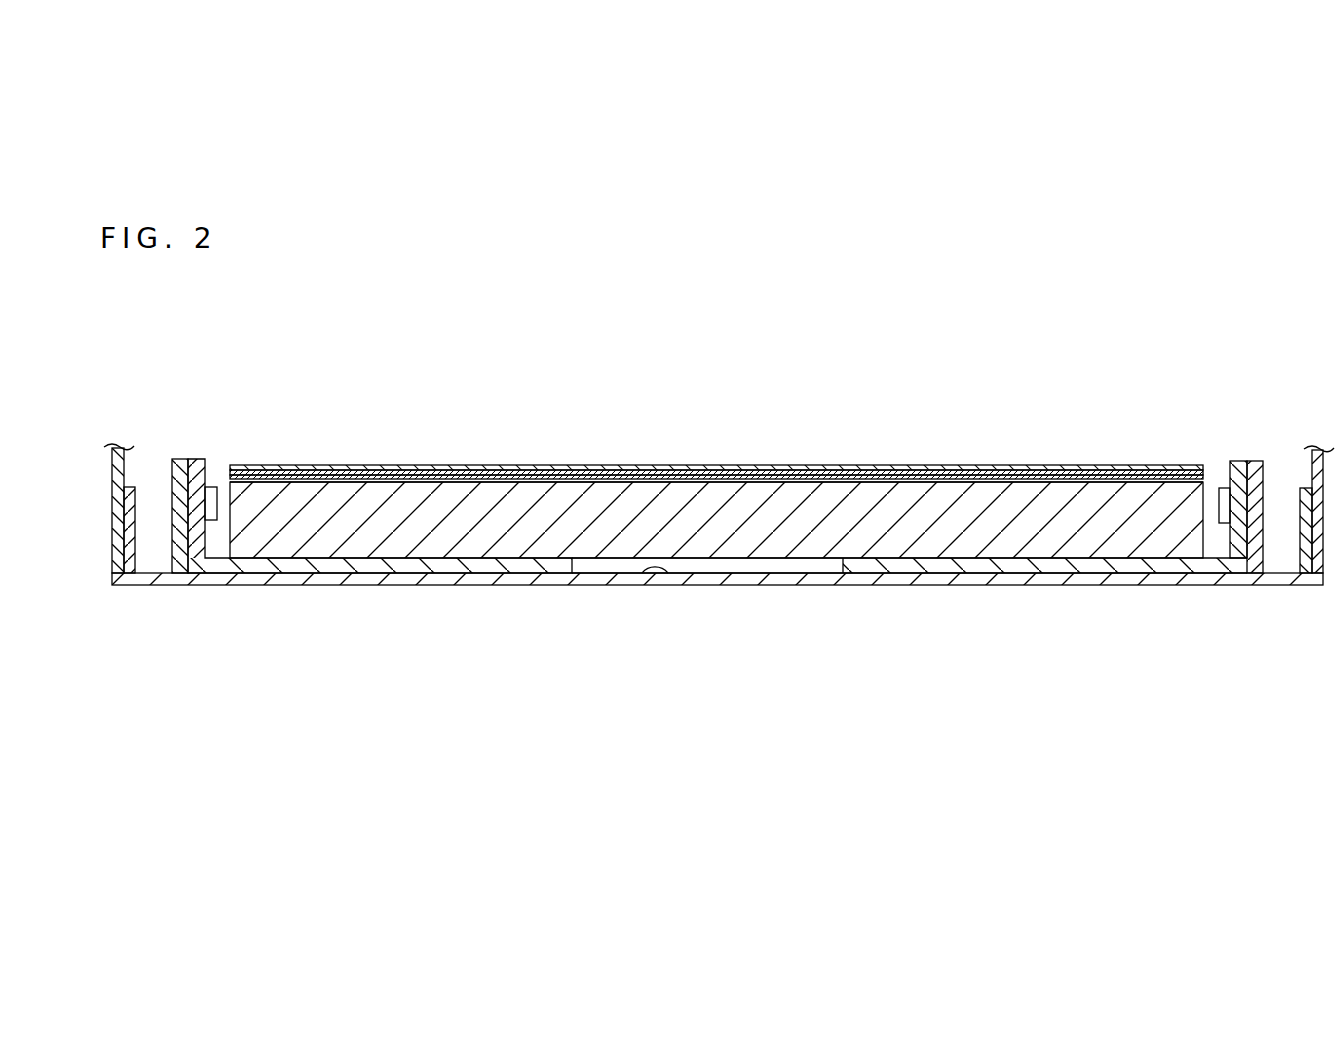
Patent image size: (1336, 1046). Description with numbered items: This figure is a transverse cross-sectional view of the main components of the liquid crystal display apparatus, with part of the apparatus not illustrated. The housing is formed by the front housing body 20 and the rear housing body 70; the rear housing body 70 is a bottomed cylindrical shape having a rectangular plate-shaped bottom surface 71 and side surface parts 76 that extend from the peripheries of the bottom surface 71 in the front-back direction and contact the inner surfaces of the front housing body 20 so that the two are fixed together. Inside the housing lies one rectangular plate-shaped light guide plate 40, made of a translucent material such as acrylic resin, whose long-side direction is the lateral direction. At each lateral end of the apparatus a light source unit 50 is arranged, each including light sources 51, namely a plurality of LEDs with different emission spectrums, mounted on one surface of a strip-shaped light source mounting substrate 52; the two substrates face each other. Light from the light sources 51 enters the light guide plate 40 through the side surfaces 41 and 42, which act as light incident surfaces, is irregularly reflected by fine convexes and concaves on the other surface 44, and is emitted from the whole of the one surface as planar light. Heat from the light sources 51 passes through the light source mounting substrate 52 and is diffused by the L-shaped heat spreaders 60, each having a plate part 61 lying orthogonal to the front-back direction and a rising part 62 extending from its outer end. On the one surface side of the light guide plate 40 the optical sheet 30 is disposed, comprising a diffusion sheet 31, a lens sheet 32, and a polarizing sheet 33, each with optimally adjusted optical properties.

The front housing body 20 is at (720, 521).
The optical sheet 30 is at (716, 409).
The diffusion sheet 31 is at (758, 396).
The lens sheet 32 is at (850, 474).
The polarizing sheet 33 is at (798, 466).
The light guide plate 40 is at (462, 525).
The side surface 41 is at (220, 530).
The side surface 42 is at (1205, 492).
The other surface 44 is at (738, 560).
The light source unit 50 is at (1222, 570).
The light source 51 is at (1225, 523).
The light source mounting substrate 52 is at (1240, 548).
The heat spreader 60 is at (1045, 613).
The plate part 61 is at (1065, 567).
The rising part 62 is at (1258, 507).
The rear housing body 70 is at (357, 567).
The bottom surface 71 is at (645, 575).
The side surface part 76 is at (1305, 500).